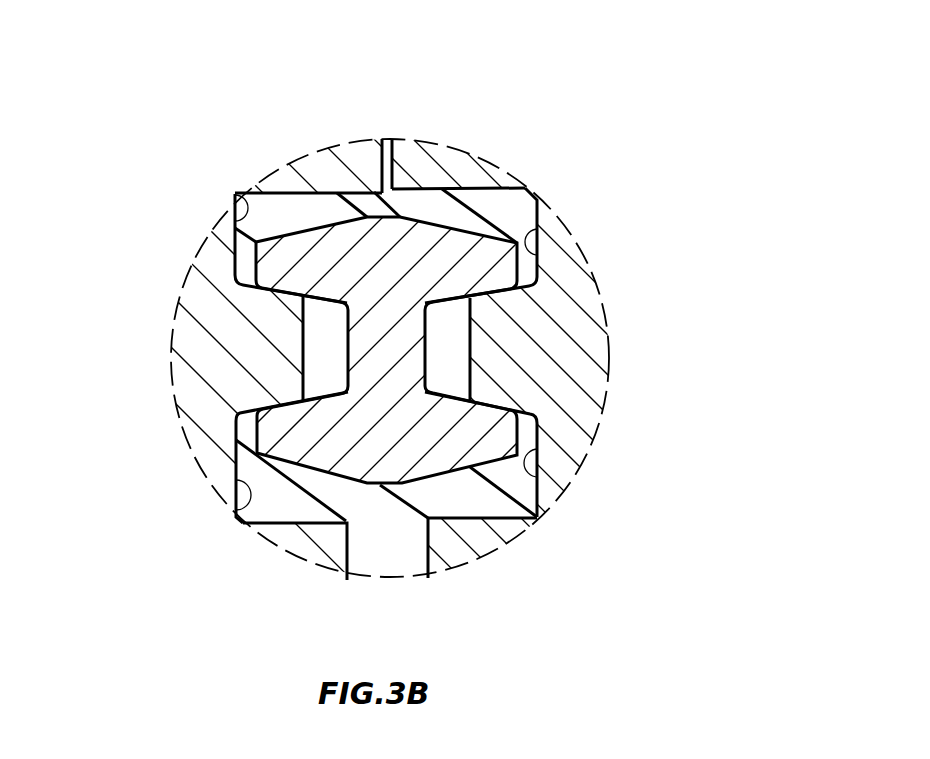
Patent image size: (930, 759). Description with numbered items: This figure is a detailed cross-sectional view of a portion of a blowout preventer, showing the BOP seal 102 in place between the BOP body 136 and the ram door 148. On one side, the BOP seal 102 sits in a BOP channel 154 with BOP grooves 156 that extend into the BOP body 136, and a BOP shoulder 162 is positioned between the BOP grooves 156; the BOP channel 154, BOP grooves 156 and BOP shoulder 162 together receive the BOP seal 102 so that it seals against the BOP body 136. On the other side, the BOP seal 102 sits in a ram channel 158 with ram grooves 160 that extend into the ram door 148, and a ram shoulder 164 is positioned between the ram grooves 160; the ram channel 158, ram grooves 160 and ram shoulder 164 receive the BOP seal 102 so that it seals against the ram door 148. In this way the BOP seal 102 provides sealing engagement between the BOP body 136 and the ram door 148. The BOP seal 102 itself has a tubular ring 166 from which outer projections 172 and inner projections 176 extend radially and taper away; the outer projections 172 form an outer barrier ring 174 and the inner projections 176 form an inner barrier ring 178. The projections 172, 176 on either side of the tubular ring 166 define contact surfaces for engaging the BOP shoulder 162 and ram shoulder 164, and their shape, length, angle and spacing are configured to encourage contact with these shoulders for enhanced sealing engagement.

The BOP seal 102 is at (500, 222).
The BOP body 136 is at (300, 547).
The ram door 148 is at (470, 540).
The BOP channel 154 is at (291, 192).
The BOP grooves 156 is at (238, 200).
The ram channel 158 is at (523, 186).
The ram grooves 160 is at (545, 240).
The BOP shoulder 162 is at (290, 344).
The ram shoulder 164 is at (483, 350).
The tubular ring 166 is at (410, 363).
The outer projections 172 is at (500, 447).
The outer barrier ring 174 is at (327, 205).
The inner projections 176 is at (263, 263).
The inner barrier ring 178 is at (392, 485).